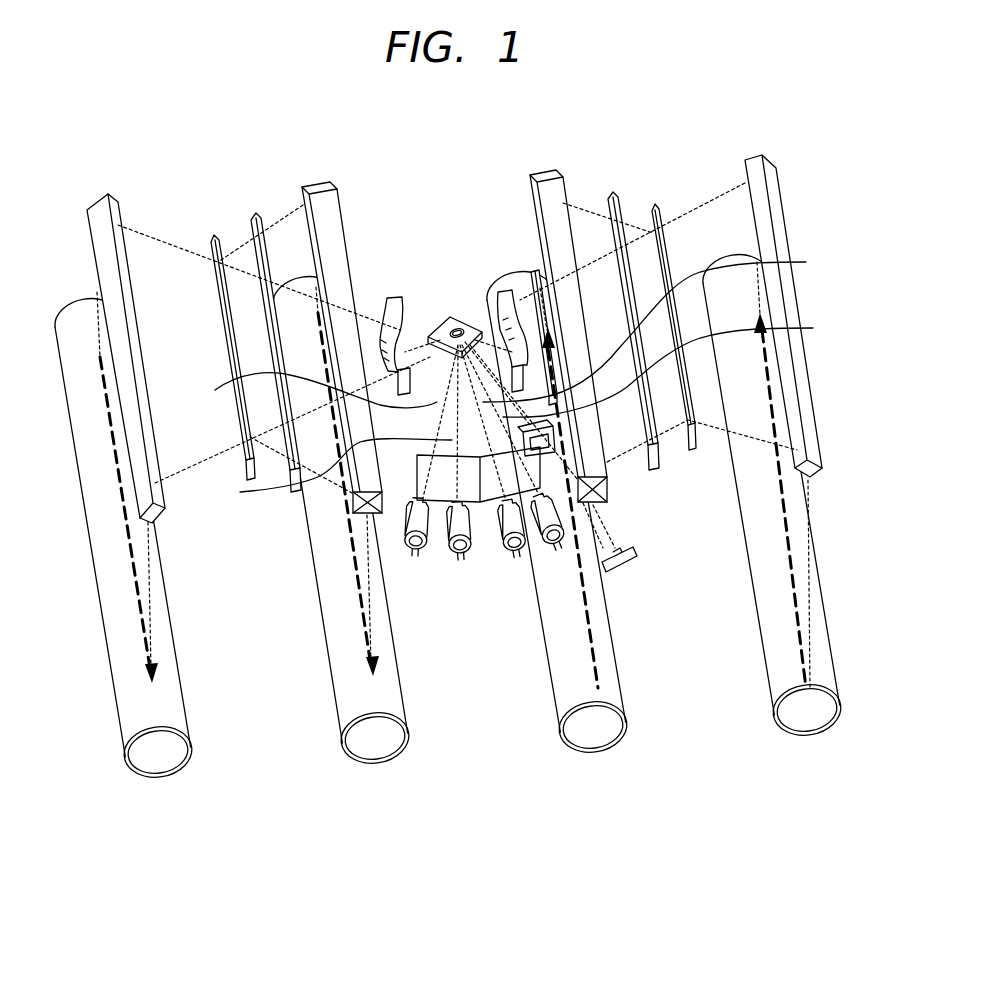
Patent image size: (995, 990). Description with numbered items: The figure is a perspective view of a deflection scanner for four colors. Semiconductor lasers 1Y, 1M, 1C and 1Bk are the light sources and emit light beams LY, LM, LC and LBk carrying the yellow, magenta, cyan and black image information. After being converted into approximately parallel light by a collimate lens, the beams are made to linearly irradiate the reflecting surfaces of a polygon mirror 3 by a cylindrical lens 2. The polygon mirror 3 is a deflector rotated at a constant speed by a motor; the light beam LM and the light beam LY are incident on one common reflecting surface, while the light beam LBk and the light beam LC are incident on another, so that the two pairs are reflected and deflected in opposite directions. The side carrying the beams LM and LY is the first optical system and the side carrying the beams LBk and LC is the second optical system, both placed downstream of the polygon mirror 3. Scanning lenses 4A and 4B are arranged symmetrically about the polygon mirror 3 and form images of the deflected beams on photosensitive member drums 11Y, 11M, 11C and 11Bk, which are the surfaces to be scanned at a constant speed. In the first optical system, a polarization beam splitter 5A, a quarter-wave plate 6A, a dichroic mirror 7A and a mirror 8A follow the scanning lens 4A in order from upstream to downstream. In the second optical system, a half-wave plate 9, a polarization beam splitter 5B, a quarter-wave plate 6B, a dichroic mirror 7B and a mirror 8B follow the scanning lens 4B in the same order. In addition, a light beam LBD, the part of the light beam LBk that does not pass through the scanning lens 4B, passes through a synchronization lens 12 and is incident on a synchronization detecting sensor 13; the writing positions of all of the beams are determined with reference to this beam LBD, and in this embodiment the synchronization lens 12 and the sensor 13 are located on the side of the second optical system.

The semiconductor laser 1Y is at (417, 558).
The semiconductor laser 1M is at (456, 560).
The semiconductor laser 1C is at (513, 558).
The semiconductor laser 1Bk is at (555, 553).
The cylindrical lens 2 is at (435, 490).
The polygon mirror 3 is at (455, 315).
The scanning lens 4A is at (394, 297).
The scanning lens 4B is at (501, 292).
The polarization beam splitter 5A is at (318, 183).
The polarization beam splitter 5B is at (540, 172).
The quarter-wave plate 6A is at (254, 213).
The quarter-wave plate 6B is at (612, 195).
The dichroic mirror 7A is at (214, 235).
The dichroic mirror 7B is at (654, 207).
The mirror 8A is at (95, 205).
The mirror 8B is at (748, 158).
The half-wave plate 9 is at (531, 272).
The photosensitive member drum 11Y is at (126, 706).
The photosensitive member drum 11M is at (342, 700).
The photosensitive member drum 11C is at (562, 684).
The photosensitive member drum 11Bk is at (779, 664).
The synchronization lens 12 is at (555, 432).
The synchronization detecting sensor 13 is at (637, 552).
The light beam LY is at (311, 390).
The light beam LM is at (328, 473).
The light beam LC is at (660, 326).
The light beam LBk is at (678, 367).
The light beam LBD is at (604, 470).